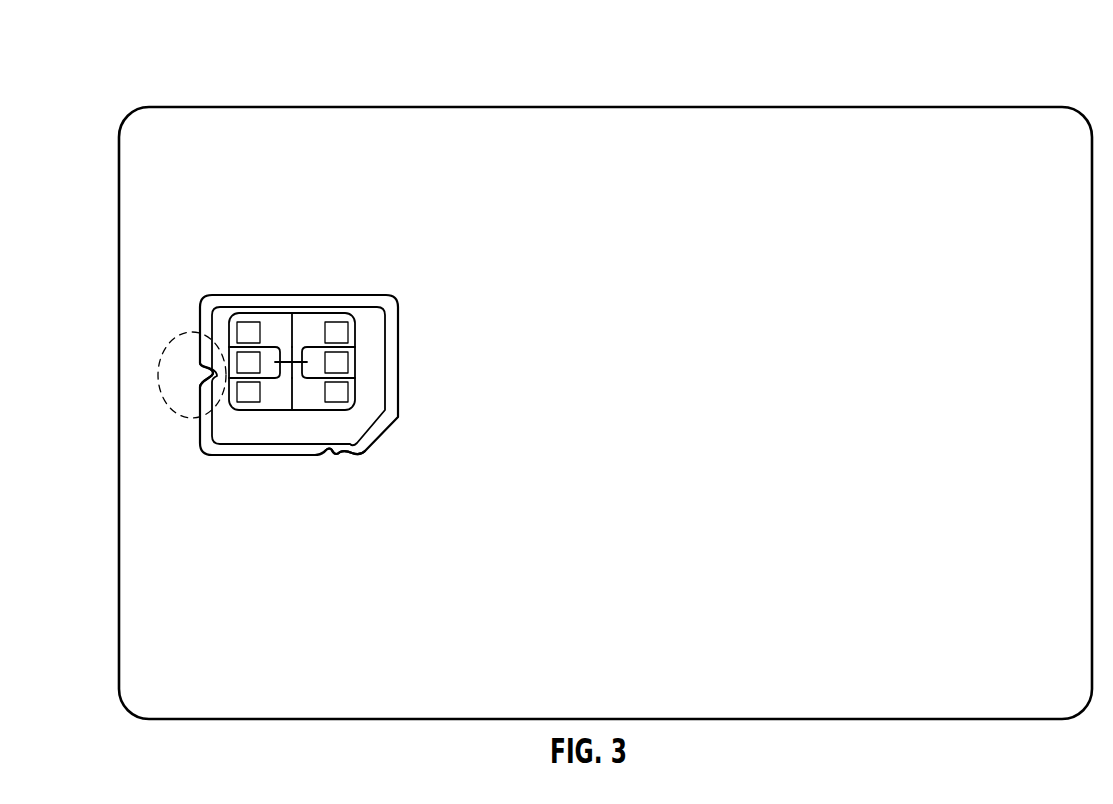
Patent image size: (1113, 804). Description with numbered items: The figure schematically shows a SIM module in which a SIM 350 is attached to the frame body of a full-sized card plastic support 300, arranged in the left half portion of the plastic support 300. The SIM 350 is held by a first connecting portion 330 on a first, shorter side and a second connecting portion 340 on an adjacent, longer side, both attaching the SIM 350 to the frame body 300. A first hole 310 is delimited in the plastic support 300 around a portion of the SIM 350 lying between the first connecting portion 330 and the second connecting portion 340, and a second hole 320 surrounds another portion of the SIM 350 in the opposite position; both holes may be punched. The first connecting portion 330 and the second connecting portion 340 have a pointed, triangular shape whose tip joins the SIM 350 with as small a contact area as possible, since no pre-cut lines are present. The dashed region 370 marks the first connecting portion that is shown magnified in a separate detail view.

The plastic support 300 is at (778, 132).
The first hole 310 is at (348, 295).
The second hole 320 is at (247, 456).
The first connecting portion 330 is at (182, 387).
The second connecting portion 340 is at (347, 468).
The SIM 350 is at (343, 370).
The first connecting portion (magnified region) 370 is at (152, 342).